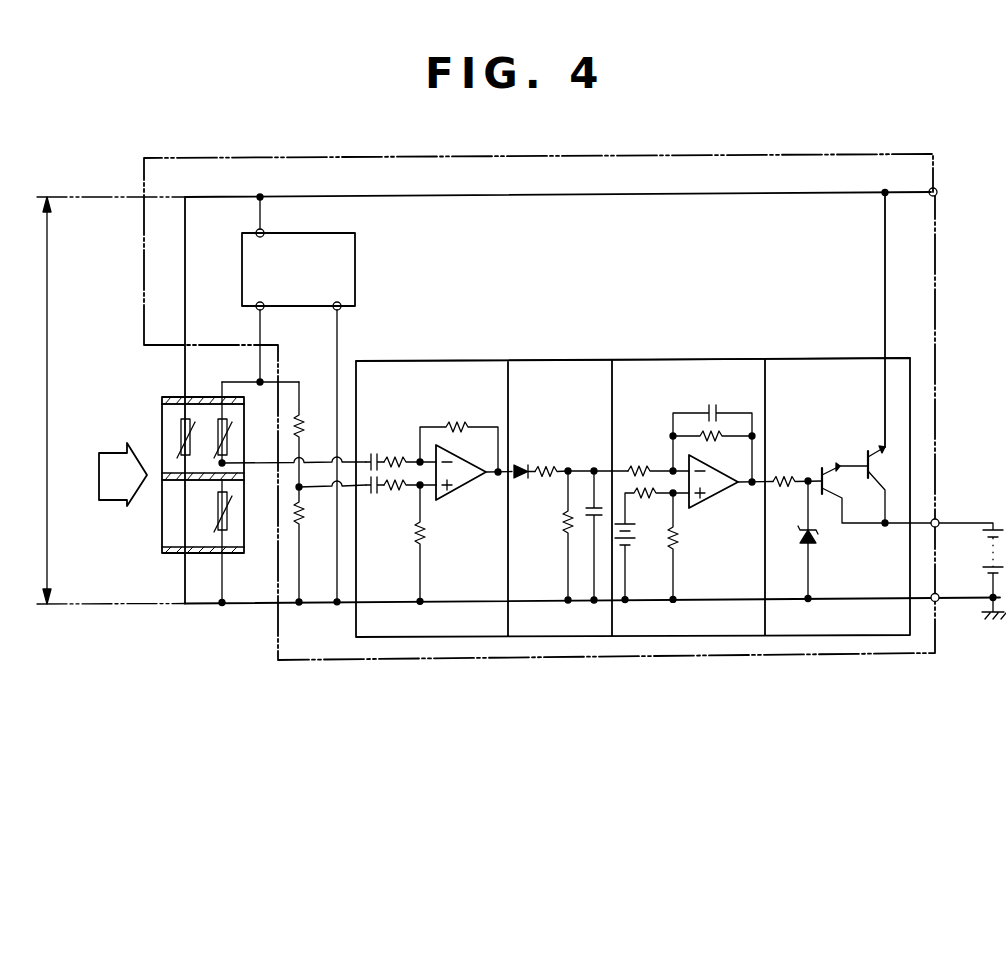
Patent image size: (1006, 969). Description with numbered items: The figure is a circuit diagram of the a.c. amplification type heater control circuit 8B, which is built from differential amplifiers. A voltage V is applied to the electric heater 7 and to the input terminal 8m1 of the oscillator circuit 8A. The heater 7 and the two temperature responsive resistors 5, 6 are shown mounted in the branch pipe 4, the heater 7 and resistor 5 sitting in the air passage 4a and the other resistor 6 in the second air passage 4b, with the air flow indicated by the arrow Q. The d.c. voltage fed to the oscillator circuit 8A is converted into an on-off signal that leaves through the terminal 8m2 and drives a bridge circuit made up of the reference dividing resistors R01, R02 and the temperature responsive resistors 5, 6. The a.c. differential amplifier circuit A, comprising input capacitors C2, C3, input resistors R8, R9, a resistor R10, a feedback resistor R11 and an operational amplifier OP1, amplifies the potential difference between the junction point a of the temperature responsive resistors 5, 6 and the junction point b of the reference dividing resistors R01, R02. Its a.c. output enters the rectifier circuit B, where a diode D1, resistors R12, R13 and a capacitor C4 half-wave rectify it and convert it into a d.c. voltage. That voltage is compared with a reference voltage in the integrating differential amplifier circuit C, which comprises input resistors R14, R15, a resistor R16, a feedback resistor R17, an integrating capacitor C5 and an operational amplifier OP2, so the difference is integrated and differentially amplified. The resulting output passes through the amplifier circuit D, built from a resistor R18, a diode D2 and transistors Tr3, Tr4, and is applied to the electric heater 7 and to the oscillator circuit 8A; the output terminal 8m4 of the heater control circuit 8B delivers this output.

The heater control circuit 8B is at (268, 157).
The oscillator circuit 8A is at (357, 283).
The input terminal of the oscillator circuit 8m1 is at (264, 231).
The terminal 8m2 is at (256, 310).
The output terminal of the heater control circuit 8m4 is at (937, 195).
The branch pipe 4 is at (160, 555).
The air passage 4a is at (165, 405).
The air passage 4b is at (165, 528).
The temperature responsive resistor 5 is at (229, 440).
The temperature responsive resistor 6 is at (229, 522).
The electric heater 7 is at (180, 432).
The junction point a is at (225, 461).
The junction point b is at (296, 487).
The reference dividing resistor R01 is at (318, 412).
The reference dividing resistor R02 is at (301, 518).
The input capacitor C2 is at (373, 452).
The input capacitor C3 is at (373, 495).
The input resistor R8 is at (398, 450).
The input resistor R9 is at (398, 495).
The resistor R10 is at (424, 538).
The feedback resistor R11 is at (458, 418).
The operational amplifier OP1 is at (470, 486).
The diode D1 is at (520, 464).
The resistor R12 is at (548, 462).
The resistor R13 is at (563, 522).
The capacitor C4 is at (586, 511).
The input resistor R14 is at (640, 462).
The input resistor R15 is at (644, 500).
The resistor R16 is at (677, 536).
The feedback resistor R17 is at (712, 444).
The integrating capacitor C5 is at (712, 405).
The operational amplifier OP2 is at (722, 498).
The resistor R18 is at (785, 472).
The transistor Tr3 is at (822, 454).
The transistor Tr4 is at (868, 452).
The diode D2 is at (813, 536).
The a.c. differential amplifier circuit A is at (414, 338).
The rectifier circuit B is at (536, 338).
The integrating differential amplifier circuit C is at (676, 336).
The amplifier circuit D is at (819, 336).
The voltage V is at (110, 400).
The flow Q is at (123, 474).